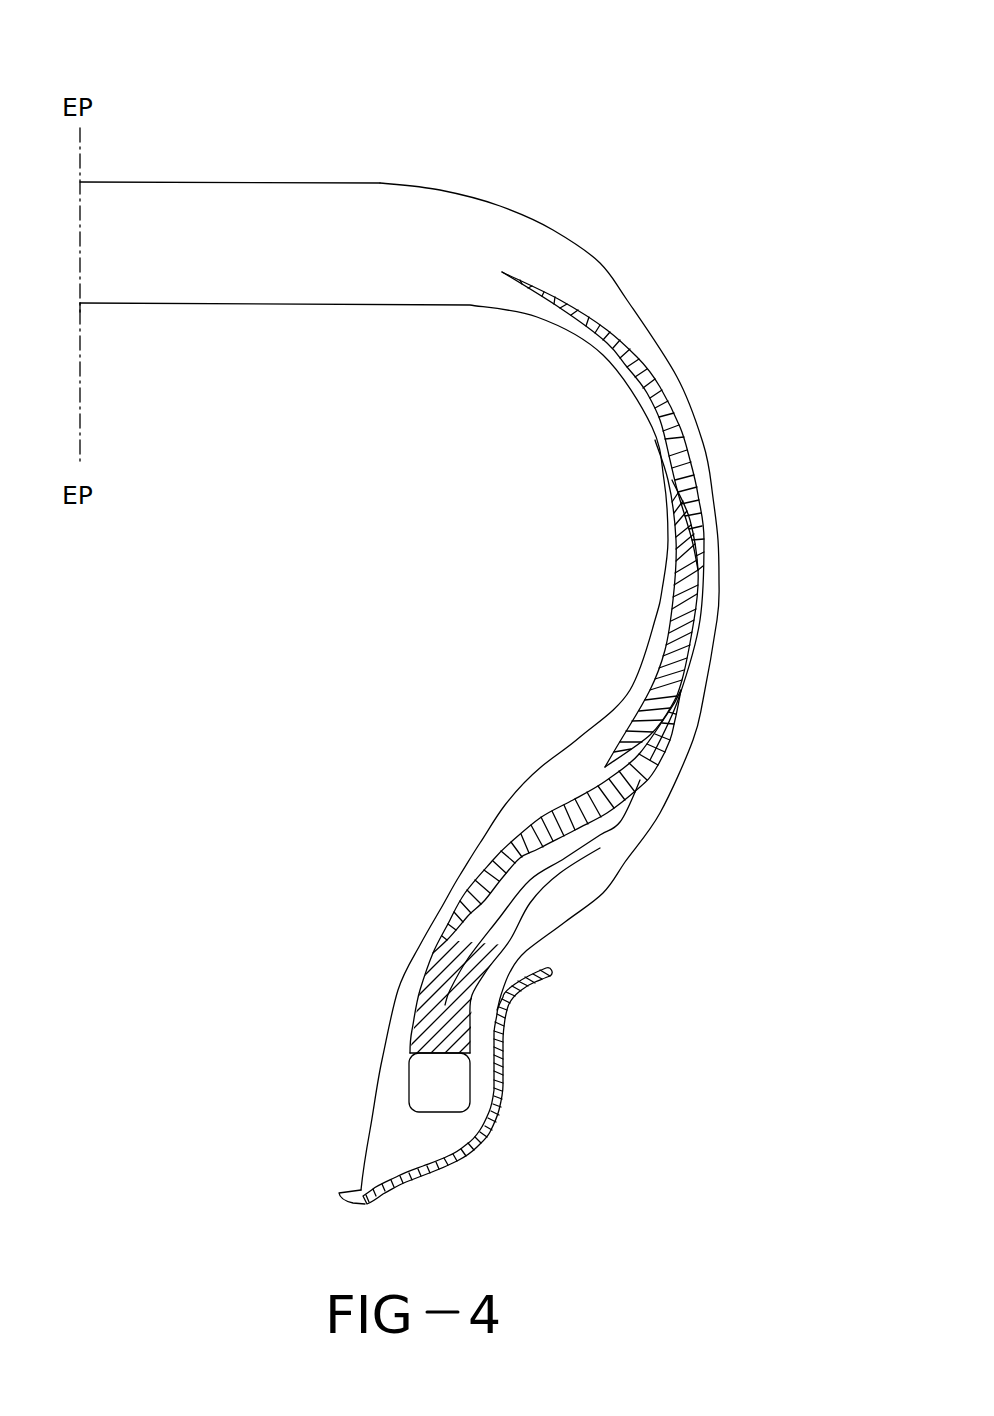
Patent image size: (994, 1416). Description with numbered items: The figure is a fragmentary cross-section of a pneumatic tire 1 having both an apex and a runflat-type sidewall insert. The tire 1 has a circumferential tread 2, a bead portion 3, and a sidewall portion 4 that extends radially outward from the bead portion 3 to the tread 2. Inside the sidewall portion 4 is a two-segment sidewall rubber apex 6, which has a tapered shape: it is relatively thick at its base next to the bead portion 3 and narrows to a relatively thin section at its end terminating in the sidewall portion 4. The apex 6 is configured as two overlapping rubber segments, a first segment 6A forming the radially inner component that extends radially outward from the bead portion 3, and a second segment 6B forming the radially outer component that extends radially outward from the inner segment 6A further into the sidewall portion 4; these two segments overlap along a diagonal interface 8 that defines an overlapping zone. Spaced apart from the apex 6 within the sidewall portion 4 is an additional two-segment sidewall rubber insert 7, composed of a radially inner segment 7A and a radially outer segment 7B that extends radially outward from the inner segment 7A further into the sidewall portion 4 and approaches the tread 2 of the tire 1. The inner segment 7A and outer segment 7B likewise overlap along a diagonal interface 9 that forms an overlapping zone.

The pneumatic tire 1 is at (623, 98).
The circumferential tread 2 is at (321, 174).
The bead portion 3 is at (405, 1094).
The sidewall portion 4 is at (741, 470).
The apex 6 is at (640, 836).
The first segment of apex 6A is at (440, 1000).
The second segment of apex 6B is at (580, 806).
The spaced-apart sidewall insert 7 is at (649, 629).
The radially inner segment of sidewall insert 7A is at (690, 603).
The radially outer segment of sidewall insert 7B is at (657, 410).
The diagonal interface 8 is at (497, 857).
The diagonal interface 9 is at (695, 538).